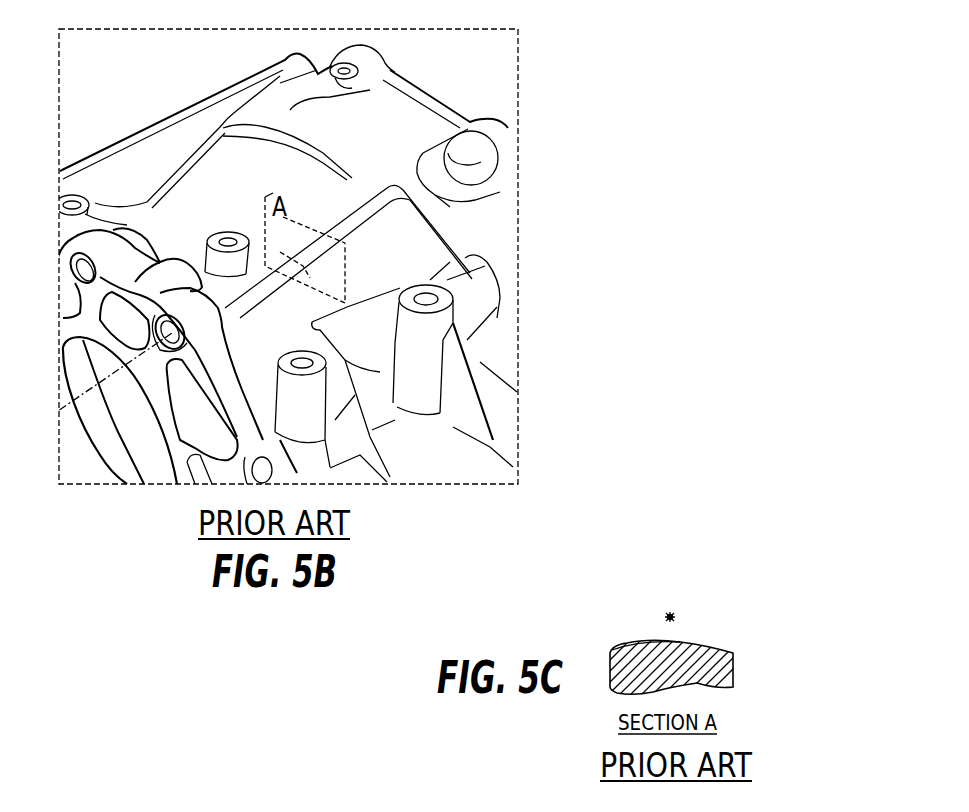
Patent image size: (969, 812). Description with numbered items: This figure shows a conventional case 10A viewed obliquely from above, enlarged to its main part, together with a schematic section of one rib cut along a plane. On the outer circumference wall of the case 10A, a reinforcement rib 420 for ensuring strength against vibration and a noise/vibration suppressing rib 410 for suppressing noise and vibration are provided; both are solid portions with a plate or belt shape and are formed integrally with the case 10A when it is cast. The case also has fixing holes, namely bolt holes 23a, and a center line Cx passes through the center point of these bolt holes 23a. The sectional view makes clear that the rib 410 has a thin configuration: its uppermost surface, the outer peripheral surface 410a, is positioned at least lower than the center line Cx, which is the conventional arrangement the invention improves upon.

In FIG. 5B, the case 10A is at (533, 137).
In FIG. 5B, the reinforcement rib 420 is at (145, 134).
In FIG. 5B, the noise/vibration suppressing rib 410 is at (343, 203).
In FIG. 5C, the noise/vibration suppressing rib 410 is at (733, 647).
In FIG. 5C, the outer peripheral surface 410a is at (632, 648).
In FIG. 5B, the bolt hole 23a is at (190, 340).
In FIG. 5B, the center line Cx is at (88, 398).
In FIG. 5C, the center line Cx is at (673, 612).